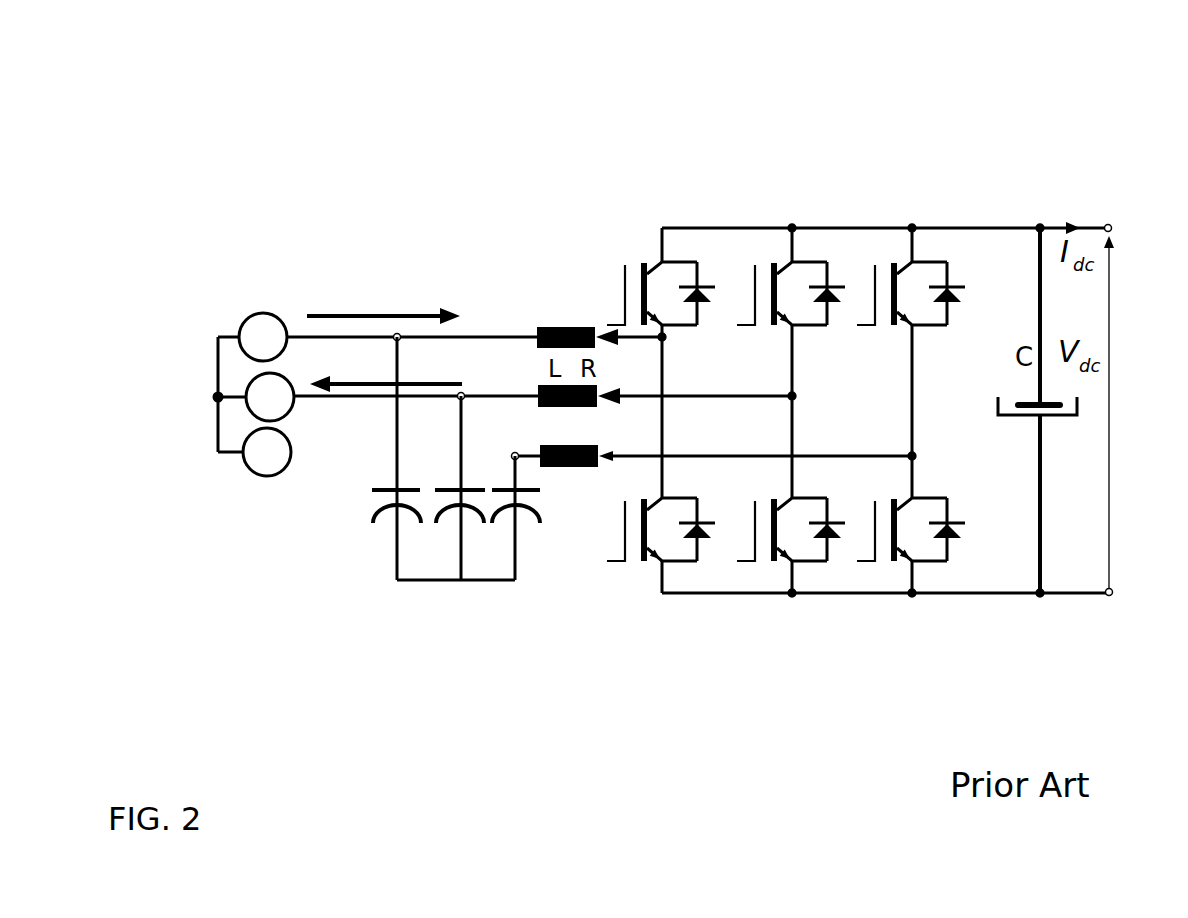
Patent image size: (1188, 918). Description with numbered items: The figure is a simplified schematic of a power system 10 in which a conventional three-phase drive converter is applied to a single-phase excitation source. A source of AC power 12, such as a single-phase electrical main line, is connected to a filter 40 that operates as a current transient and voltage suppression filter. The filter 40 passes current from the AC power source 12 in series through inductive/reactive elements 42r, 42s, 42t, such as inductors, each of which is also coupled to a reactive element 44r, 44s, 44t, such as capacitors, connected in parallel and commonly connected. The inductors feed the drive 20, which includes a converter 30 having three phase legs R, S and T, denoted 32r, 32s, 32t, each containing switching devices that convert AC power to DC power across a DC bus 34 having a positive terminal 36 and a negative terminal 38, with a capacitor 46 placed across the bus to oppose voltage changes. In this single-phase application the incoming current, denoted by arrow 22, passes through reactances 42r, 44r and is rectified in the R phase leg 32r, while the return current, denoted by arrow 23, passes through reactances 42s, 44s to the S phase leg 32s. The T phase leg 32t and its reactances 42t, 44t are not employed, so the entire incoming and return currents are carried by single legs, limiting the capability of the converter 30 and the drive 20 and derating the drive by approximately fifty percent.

The power system 10 is at (973, 100).
The source of AC power 12 is at (236, 313).
The drive 20 is at (763, 132).
The arrow denoting incoming current IAC 22 is at (426, 314).
The arrow denoting return current 23 is at (426, 384).
The converter 30 is at (949, 678).
The R phase leg 32r is at (662, 438).
The S phase leg 32s is at (792, 445).
The T phase leg 32t is at (914, 392).
The DC bus 34 is at (1022, 228).
The positive terminal 36 is at (1102, 227).
The negative terminal 38 is at (1110, 588).
The filter 40 is at (474, 506).
The inductive/reactive element 42r is at (553, 326).
The inductive/reactive element 42s is at (538, 390).
The inductive/reactive element 42t is at (545, 446).
The reactive element 44r is at (390, 489).
The reactive element 44s is at (462, 489).
The reactive element 44t is at (540, 492).
The capacitor 46 is at (1053, 418).